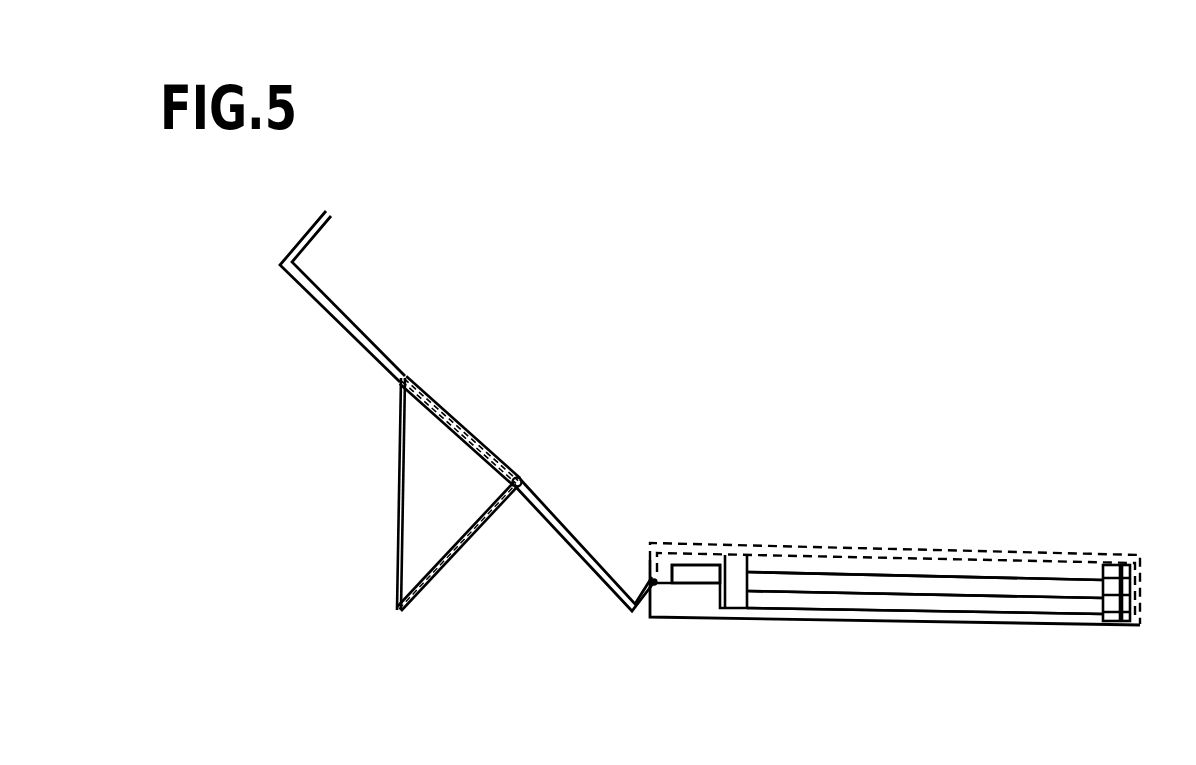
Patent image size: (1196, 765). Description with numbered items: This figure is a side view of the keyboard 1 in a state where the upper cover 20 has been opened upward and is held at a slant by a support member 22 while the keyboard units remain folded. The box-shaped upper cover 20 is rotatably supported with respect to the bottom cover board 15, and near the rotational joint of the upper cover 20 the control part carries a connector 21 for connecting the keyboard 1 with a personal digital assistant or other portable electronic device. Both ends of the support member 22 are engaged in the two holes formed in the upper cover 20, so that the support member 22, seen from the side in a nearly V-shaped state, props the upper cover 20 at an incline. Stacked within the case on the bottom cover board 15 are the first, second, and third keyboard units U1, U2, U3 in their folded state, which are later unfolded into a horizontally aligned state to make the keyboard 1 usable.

The keyboard 1 is at (918, 476).
The bottom cover board 15 is at (887, 612).
The upper cover 20 is at (340, 312).
The connector 21 is at (708, 572).
The support member 22 is at (393, 584).
The first keyboard unit U1 is at (968, 602).
The second keyboard unit U2 is at (1045, 590).
The third keyboard unit U3 is at (1003, 565).